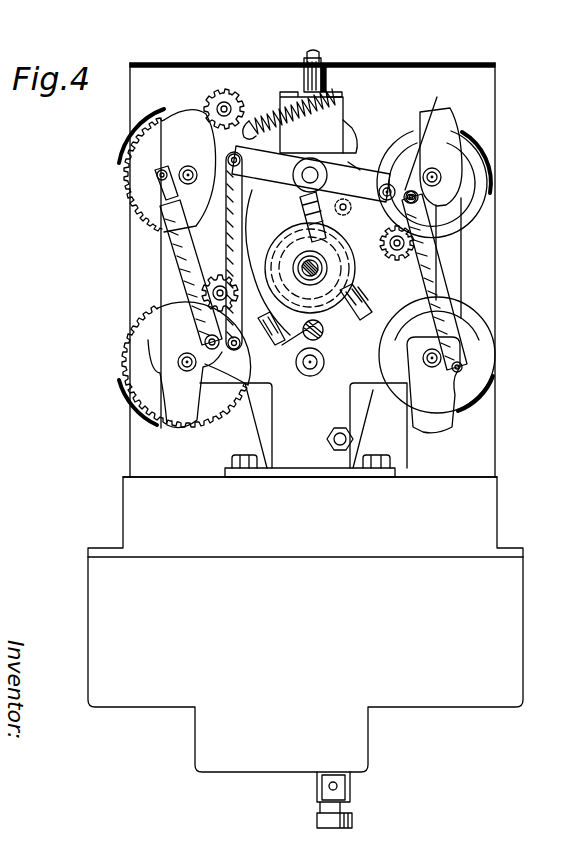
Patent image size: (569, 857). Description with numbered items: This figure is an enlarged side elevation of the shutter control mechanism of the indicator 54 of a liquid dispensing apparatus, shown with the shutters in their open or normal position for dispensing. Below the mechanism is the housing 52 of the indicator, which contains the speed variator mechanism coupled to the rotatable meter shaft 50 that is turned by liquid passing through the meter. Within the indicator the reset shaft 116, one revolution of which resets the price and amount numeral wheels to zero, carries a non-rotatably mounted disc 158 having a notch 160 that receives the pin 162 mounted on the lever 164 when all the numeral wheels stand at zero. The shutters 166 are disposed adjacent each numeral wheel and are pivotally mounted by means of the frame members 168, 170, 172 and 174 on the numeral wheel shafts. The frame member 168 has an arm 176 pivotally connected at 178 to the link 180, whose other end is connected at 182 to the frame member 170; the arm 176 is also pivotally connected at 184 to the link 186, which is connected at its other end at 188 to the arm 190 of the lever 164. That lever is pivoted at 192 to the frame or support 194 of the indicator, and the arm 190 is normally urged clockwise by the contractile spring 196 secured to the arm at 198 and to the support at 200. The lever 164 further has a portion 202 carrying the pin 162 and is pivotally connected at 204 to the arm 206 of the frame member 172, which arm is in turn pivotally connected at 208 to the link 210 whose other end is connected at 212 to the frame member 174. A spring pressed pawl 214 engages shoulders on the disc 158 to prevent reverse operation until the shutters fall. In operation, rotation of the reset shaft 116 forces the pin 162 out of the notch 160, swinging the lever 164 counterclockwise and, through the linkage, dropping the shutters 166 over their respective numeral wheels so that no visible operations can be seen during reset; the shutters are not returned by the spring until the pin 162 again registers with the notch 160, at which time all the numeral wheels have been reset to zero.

The meter shaft 50 is at (340, 808).
The housing 52 is at (512, 643).
The indicator 54 is at (490, 437).
The reset shaft 116 is at (331, 283).
The disc 158 is at (327, 308).
The notch 160 is at (332, 272).
The pin 162 is at (318, 222).
The lever 164 is at (346, 166).
The shutters 166 is at (143, 122).
The frame member 168 is at (180, 402).
The frame member 170 is at (175, 137).
The frame member 172 is at (447, 132).
The frame member 174 is at (443, 397).
The arm 176 is at (207, 366).
The pivotal connection 178 is at (197, 330).
The link 180 is at (182, 245).
The pivotal connection 182 is at (156, 177).
The pivotal connection 184 is at (217, 340).
The link 186 is at (227, 258).
The pivotal connection 188 is at (206, 106).
The arm 190 is at (274, 120).
The pivot 192 is at (310, 168).
The frame or support 194 is at (306, 56).
The contractile spring 196 is at (324, 90).
The spring attachment point 198 is at (248, 134).
The spring attachment point 200 is at (338, 94).
The portion 202 is at (387, 185).
The pivotal connection 204 is at (405, 191).
The arm 206 is at (435, 134).
The pivotal connection 208 is at (418, 197).
The link 210 is at (433, 272).
The pivotal connection 212 is at (440, 355).
The spring pressed pawl 214 is at (305, 377).